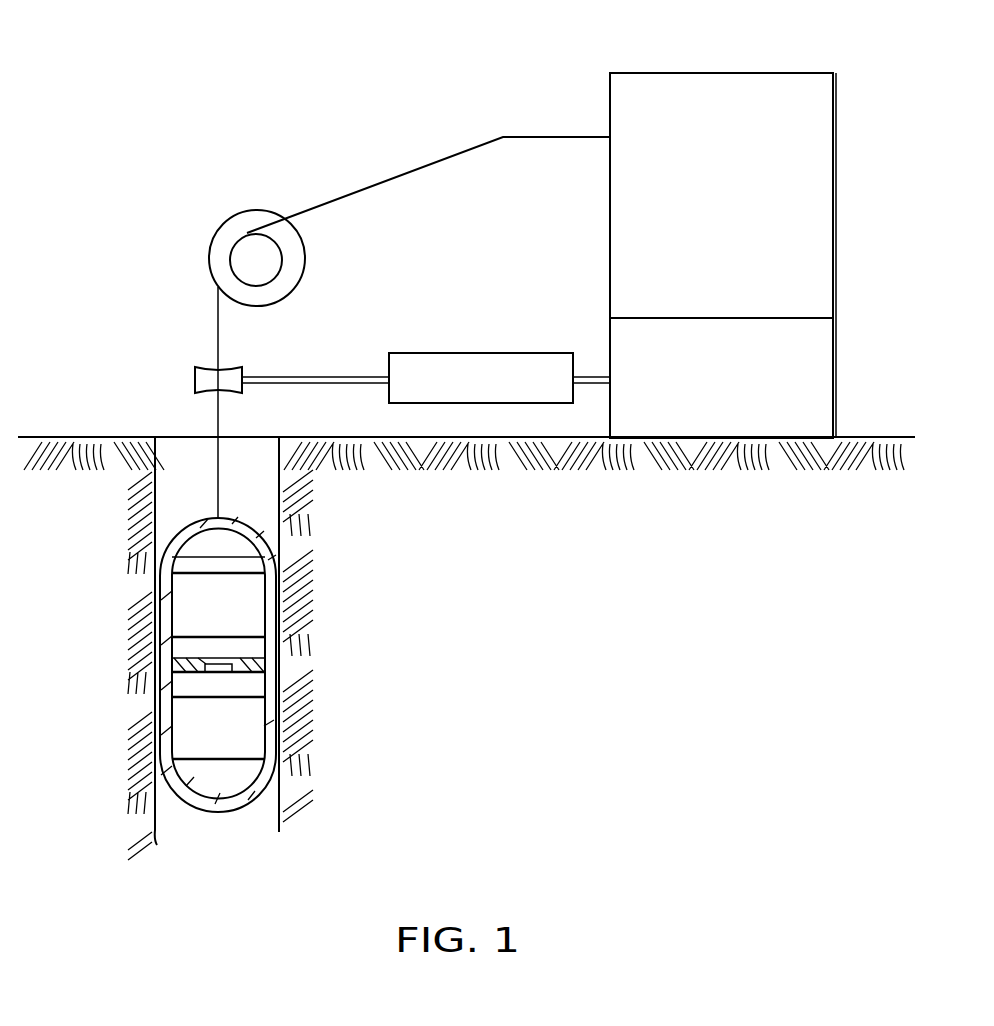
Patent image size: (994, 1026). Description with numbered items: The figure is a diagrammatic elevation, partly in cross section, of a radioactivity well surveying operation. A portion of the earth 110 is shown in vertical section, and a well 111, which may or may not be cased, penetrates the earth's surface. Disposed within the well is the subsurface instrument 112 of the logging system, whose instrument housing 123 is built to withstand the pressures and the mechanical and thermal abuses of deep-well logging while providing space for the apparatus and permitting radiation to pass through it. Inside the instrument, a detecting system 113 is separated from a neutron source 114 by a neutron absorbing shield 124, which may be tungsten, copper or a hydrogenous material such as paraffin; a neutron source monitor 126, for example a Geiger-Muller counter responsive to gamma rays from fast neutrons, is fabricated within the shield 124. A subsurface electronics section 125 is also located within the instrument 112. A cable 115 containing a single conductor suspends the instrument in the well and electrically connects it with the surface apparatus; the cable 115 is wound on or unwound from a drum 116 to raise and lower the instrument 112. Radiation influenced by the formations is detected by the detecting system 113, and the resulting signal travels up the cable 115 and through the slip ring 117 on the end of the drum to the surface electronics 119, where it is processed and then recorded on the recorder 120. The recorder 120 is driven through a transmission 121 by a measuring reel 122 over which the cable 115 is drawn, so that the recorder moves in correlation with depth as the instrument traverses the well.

The earth 110 is at (70, 438).
The well 111 is at (175, 446).
The subsurface instrument 112 is at (246, 518).
The detecting system 113 is at (240, 613).
The neutron source 114 is at (242, 735).
The cable 115 is at (218, 446).
The drum 116 is at (214, 245).
The slip ring 117 is at (282, 263).
The surface electronics 119 is at (822, 73).
The recorder 120 is at (836, 392).
The transmission 121 is at (425, 353).
The measuring reel 122 is at (228, 367).
The instrument housing 123 is at (253, 800).
The neutron absorbing shield 124 is at (243, 657).
The subsurface electronics section 125 is at (248, 563).
The neutron source monitor 126 is at (218, 672).